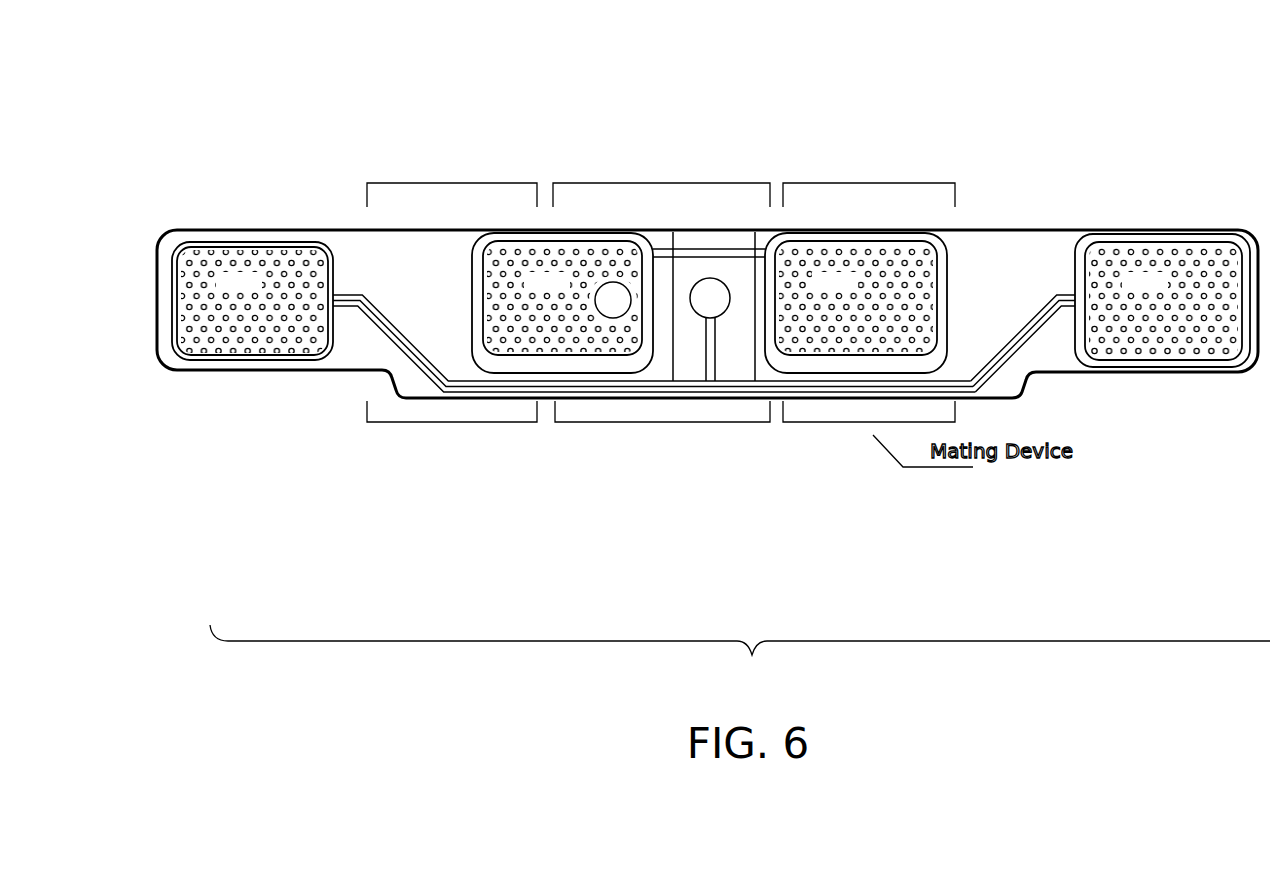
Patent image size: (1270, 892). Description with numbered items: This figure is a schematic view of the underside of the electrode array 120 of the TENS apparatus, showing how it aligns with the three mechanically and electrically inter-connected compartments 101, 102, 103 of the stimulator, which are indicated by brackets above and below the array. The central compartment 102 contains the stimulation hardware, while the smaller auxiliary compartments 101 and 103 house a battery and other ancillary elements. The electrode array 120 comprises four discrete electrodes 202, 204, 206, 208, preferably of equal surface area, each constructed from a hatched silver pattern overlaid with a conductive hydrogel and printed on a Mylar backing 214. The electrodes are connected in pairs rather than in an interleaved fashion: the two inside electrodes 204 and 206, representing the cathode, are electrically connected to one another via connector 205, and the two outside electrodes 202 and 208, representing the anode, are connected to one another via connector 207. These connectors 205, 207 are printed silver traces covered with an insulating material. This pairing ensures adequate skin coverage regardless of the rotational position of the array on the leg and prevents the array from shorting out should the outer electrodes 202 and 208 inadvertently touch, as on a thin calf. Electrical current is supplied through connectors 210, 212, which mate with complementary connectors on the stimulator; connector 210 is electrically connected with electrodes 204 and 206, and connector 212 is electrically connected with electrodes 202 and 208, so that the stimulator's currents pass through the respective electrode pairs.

The compartment 101 is at (510, 182).
The compartment 102 is at (623, 182).
The compartment 103 is at (912, 182).
The electrode array 120 is at (740, 656).
The electrode 202 is at (252, 301).
The electrode 204 is at (562, 303).
The connector 205 is at (730, 252).
The electrode 206 is at (856, 303).
The connector 207 is at (1038, 316).
The electrode 208 is at (1162, 300).
The connector 210 is at (603, 295).
The connector 212 is at (708, 280).
The backing 214 is at (1007, 302).